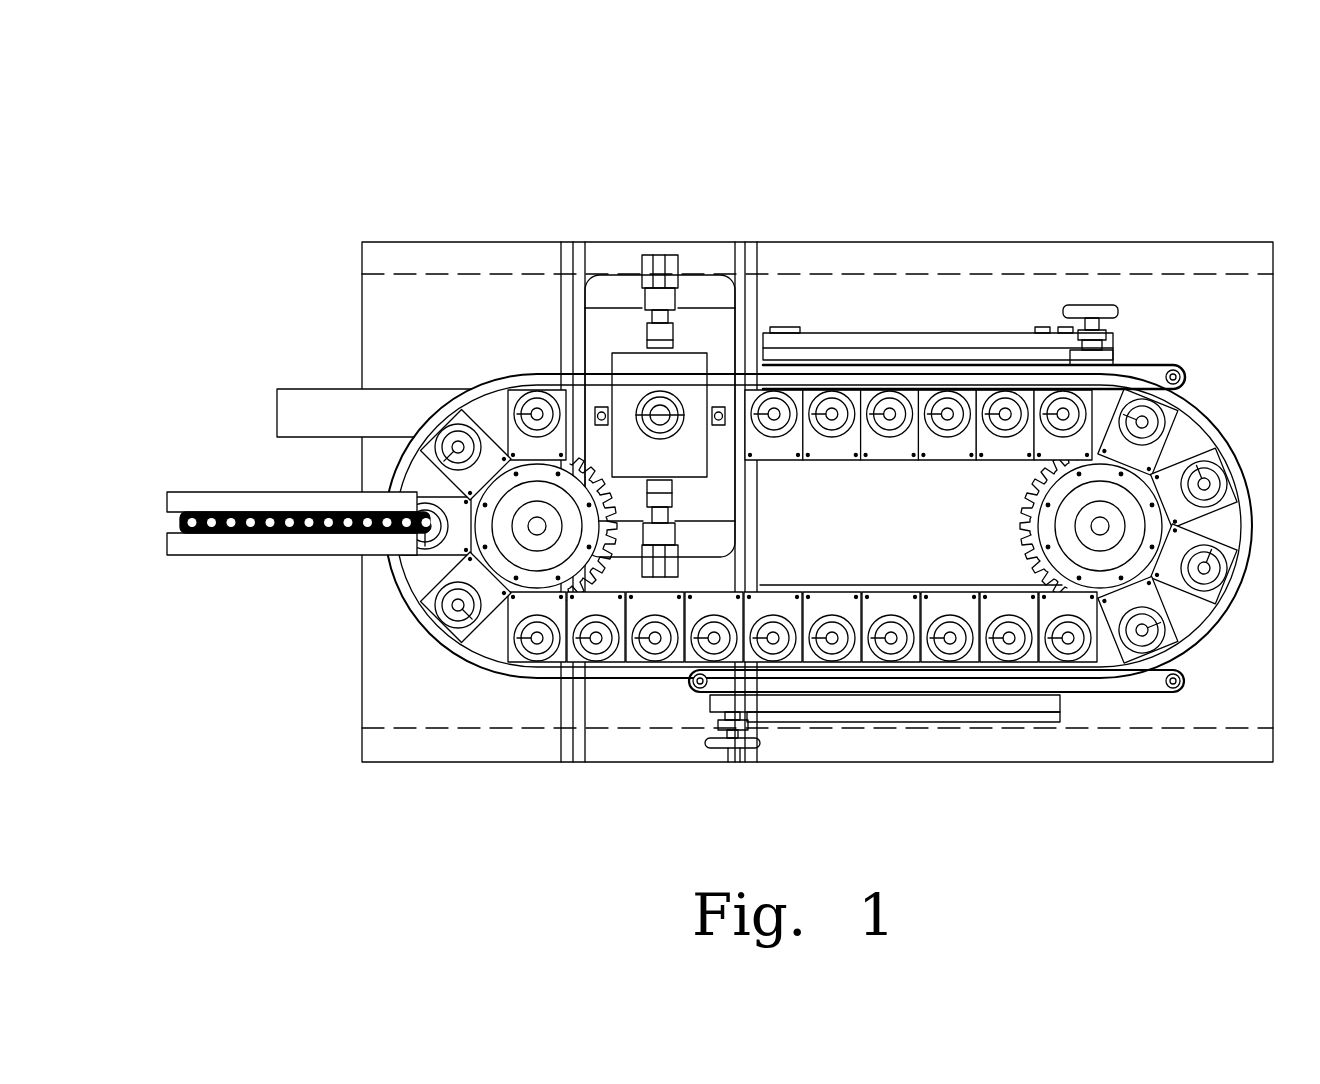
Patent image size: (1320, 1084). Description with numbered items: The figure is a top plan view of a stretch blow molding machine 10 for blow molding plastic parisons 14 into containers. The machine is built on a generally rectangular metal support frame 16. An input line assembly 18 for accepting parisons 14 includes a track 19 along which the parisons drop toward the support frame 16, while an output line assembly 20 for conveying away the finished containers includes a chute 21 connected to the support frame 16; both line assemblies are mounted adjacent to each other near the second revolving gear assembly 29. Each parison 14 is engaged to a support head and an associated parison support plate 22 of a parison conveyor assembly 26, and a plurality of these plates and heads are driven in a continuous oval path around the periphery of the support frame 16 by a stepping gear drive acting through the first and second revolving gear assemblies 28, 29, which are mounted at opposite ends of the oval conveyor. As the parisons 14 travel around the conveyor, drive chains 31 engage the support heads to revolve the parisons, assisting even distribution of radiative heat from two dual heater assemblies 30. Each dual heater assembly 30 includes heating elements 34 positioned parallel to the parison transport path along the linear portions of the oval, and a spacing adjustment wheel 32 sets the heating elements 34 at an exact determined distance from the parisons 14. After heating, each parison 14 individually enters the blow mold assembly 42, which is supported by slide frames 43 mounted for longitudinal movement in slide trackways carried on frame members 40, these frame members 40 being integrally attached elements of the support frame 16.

The stretch blow molding machine 10 is at (1200, 138).
The parison 14 is at (195, 512).
The support frame 16 is at (837, 243).
The input line assembly 18 is at (232, 590).
The track 19 is at (320, 540).
The output line assembly 20 is at (318, 358).
The chute 21 is at (388, 405).
The parison support plate 22 is at (657, 667).
The parison conveyor assembly 26 is at (1202, 368).
The first revolving gear assembly 28 is at (1060, 510).
The second revolving gear assembly 29 is at (570, 545).
The dual heater assembly 30 is at (953, 320).
The drive chain 31 is at (1162, 375).
The spacing adjustment wheel 32 is at (718, 762).
The heating element 34 is at (940, 700).
The frame member 40 is at (566, 305).
The blow mold assembly 42 is at (689, 330).
The slide frame 43 is at (592, 242).